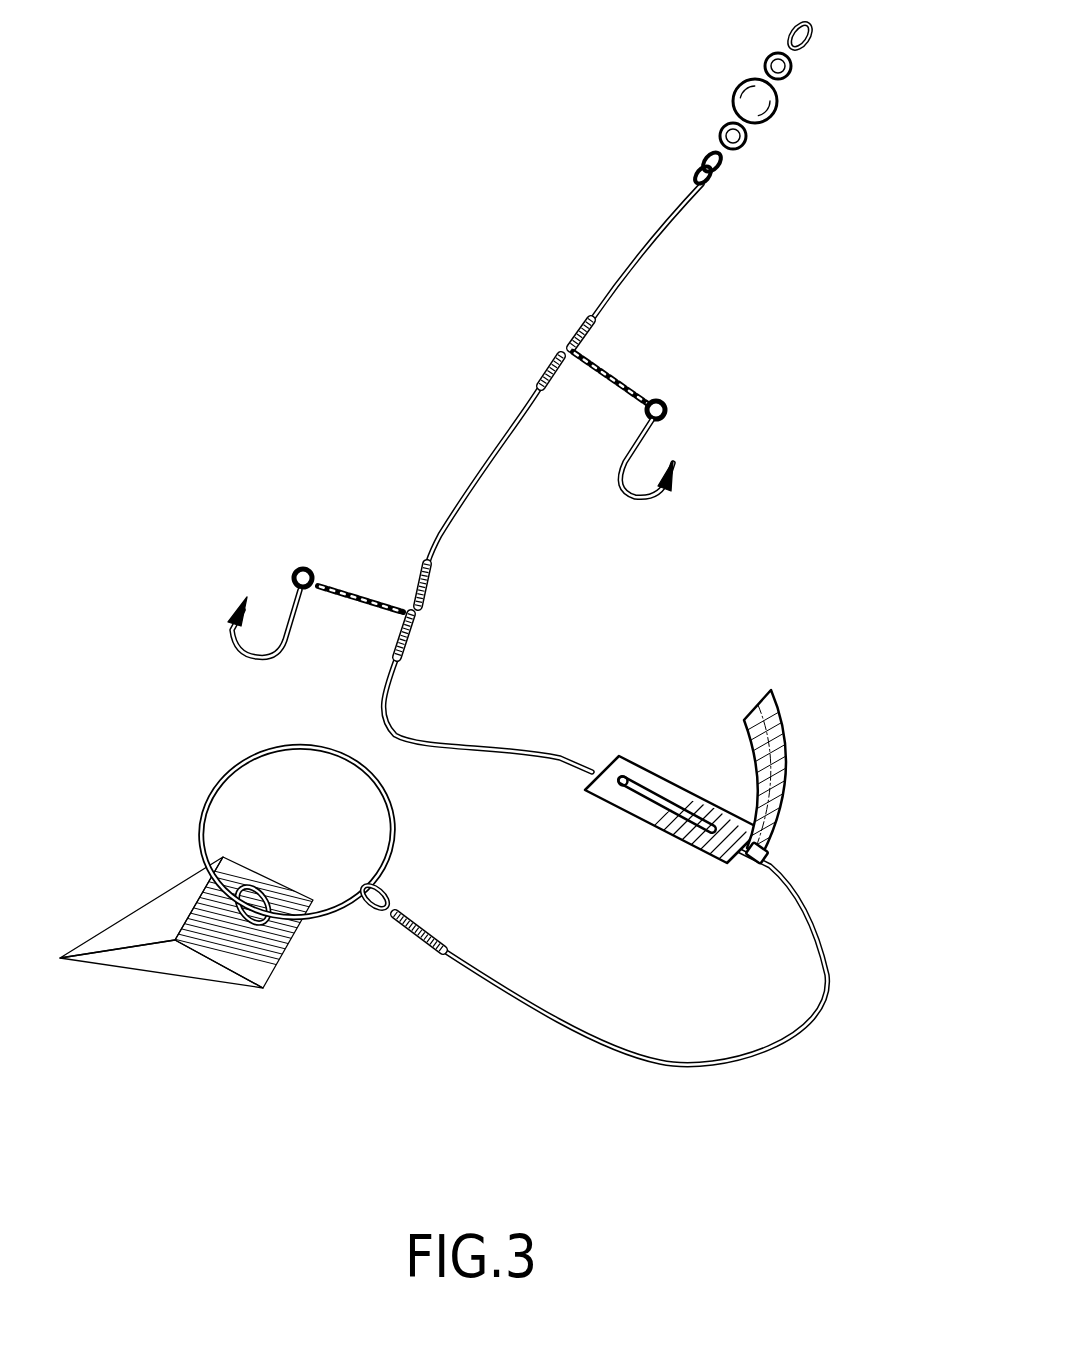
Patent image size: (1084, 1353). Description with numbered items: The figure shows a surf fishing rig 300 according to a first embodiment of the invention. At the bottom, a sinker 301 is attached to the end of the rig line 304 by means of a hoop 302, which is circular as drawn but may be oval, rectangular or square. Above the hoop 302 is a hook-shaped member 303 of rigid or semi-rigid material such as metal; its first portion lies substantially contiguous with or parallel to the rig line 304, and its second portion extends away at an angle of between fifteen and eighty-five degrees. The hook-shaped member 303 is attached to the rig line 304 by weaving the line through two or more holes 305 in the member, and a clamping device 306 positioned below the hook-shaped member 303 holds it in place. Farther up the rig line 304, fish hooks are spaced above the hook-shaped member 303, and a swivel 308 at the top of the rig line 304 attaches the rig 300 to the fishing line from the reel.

The surf fishing rig 300 is at (376, 264).
The sinker 301 is at (120, 957).
The hoop 302 is at (343, 920).
The hook-shaped member 303 is at (785, 737).
The rig line 304 is at (680, 1063).
The holes 305 is at (700, 835).
The clamping device 306 is at (764, 850).
The swivel 308 is at (779, 108).